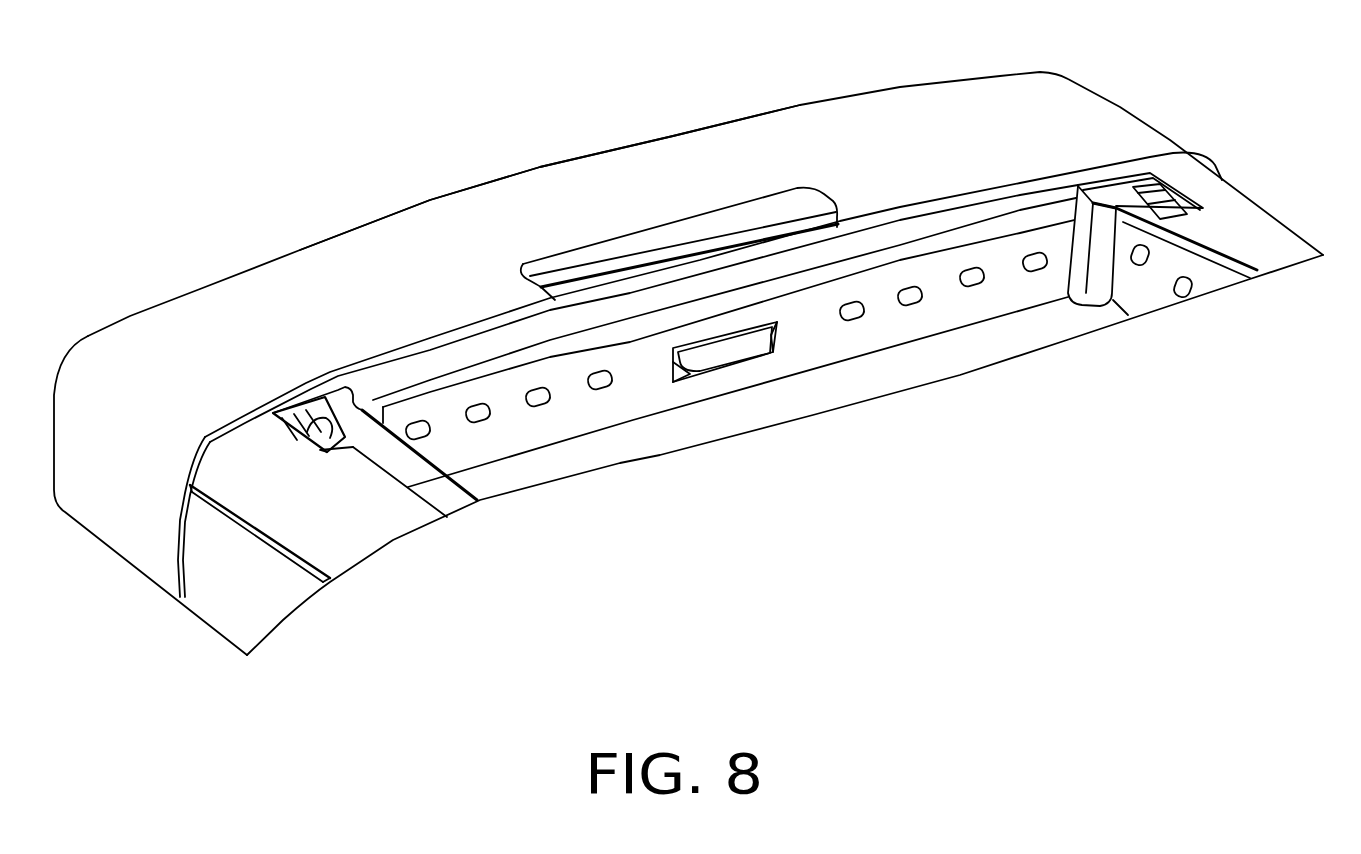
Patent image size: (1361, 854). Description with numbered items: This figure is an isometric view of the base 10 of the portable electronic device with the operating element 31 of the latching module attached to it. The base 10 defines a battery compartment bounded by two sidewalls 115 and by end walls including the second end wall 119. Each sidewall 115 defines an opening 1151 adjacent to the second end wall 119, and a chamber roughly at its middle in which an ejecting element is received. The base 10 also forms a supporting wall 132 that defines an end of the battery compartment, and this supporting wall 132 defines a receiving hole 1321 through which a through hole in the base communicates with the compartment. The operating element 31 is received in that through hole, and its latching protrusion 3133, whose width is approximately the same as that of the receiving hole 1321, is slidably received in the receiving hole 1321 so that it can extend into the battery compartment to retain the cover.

The base 10 is at (1166, 119).
The second end wall 119 is at (345, 260).
The sidewall 115 is at (230, 598).
The opening 1151 is at (312, 430).
The supporting wall 132 is at (683, 290).
The operating element 31 is at (760, 222).
The receiving hole 1321 is at (674, 380).
The latching protrusion 3133 is at (738, 358).